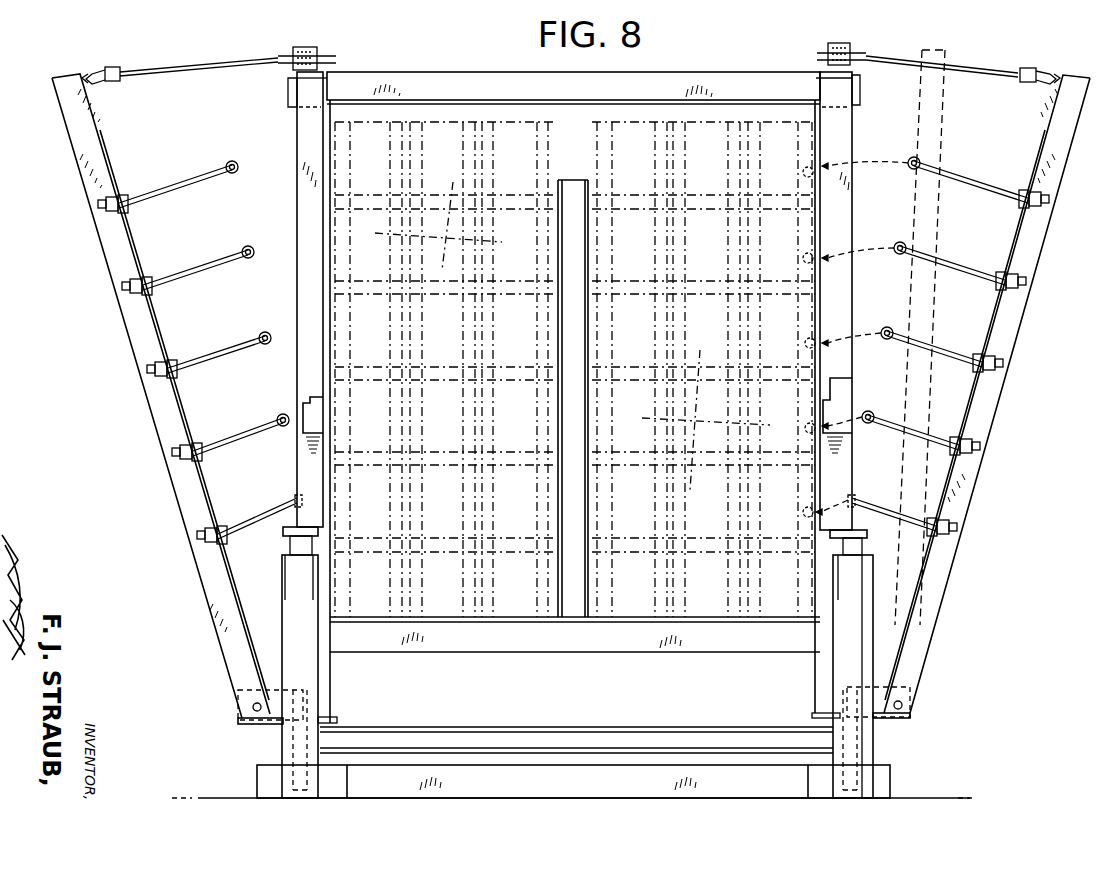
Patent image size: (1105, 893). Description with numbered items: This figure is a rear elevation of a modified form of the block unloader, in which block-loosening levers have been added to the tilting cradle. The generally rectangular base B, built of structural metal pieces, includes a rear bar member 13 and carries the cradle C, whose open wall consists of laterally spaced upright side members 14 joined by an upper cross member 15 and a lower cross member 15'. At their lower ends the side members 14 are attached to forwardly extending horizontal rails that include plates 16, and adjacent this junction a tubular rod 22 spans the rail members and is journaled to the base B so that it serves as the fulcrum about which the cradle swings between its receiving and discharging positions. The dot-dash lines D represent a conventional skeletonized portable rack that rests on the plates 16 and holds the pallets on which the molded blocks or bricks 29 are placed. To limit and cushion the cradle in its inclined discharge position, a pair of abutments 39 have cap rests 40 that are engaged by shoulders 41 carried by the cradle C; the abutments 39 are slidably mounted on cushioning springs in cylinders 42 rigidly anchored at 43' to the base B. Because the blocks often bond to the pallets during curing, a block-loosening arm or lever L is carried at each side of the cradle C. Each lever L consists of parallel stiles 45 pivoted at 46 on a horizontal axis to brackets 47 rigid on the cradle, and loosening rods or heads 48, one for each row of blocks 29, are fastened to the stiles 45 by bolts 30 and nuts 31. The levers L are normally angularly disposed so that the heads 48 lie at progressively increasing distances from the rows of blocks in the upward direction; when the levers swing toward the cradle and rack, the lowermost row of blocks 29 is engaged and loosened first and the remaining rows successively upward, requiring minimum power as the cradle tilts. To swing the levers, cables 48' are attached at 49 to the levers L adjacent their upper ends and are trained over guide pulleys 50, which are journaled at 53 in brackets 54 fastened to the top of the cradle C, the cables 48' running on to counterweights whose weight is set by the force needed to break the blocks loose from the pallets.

The rear bar member 13 is at (657, 780).
The side members 14 is at (305, 219).
The upper cross member 15 is at (573, 71).
The lower cross member 15' is at (575, 652).
The plates 16 is at (268, 725).
The tubular rod 22 is at (516, 738).
The blocks or bricks 29 is at (572, 336).
The bolts 30 is at (188, 186).
The nuts 31 is at (152, 293).
The abutments 39 is at (292, 546).
The cap rests 40 is at (318, 528).
The shoulders 41 is at (304, 410).
The cylinders 42 is at (305, 680).
The anchorage 43' is at (574, 781).
The stiles 45 is at (200, 513).
The pivot 46 is at (252, 706).
The brackets 47 is at (238, 692).
The loosening rods or heads 48 is at (573, 337).
The cables 48' is at (569, 51).
The cable attachment 49 is at (108, 68).
The guide pulleys 50 is at (320, 58).
The journal 53 is at (304, 48).
The brackets 54 is at (290, 72).
The base B is at (491, 802).
The cradle C is at (477, 63).
The portable rack D is at (568, 170).
The block-loosening arm or lever L is at (145, 404).